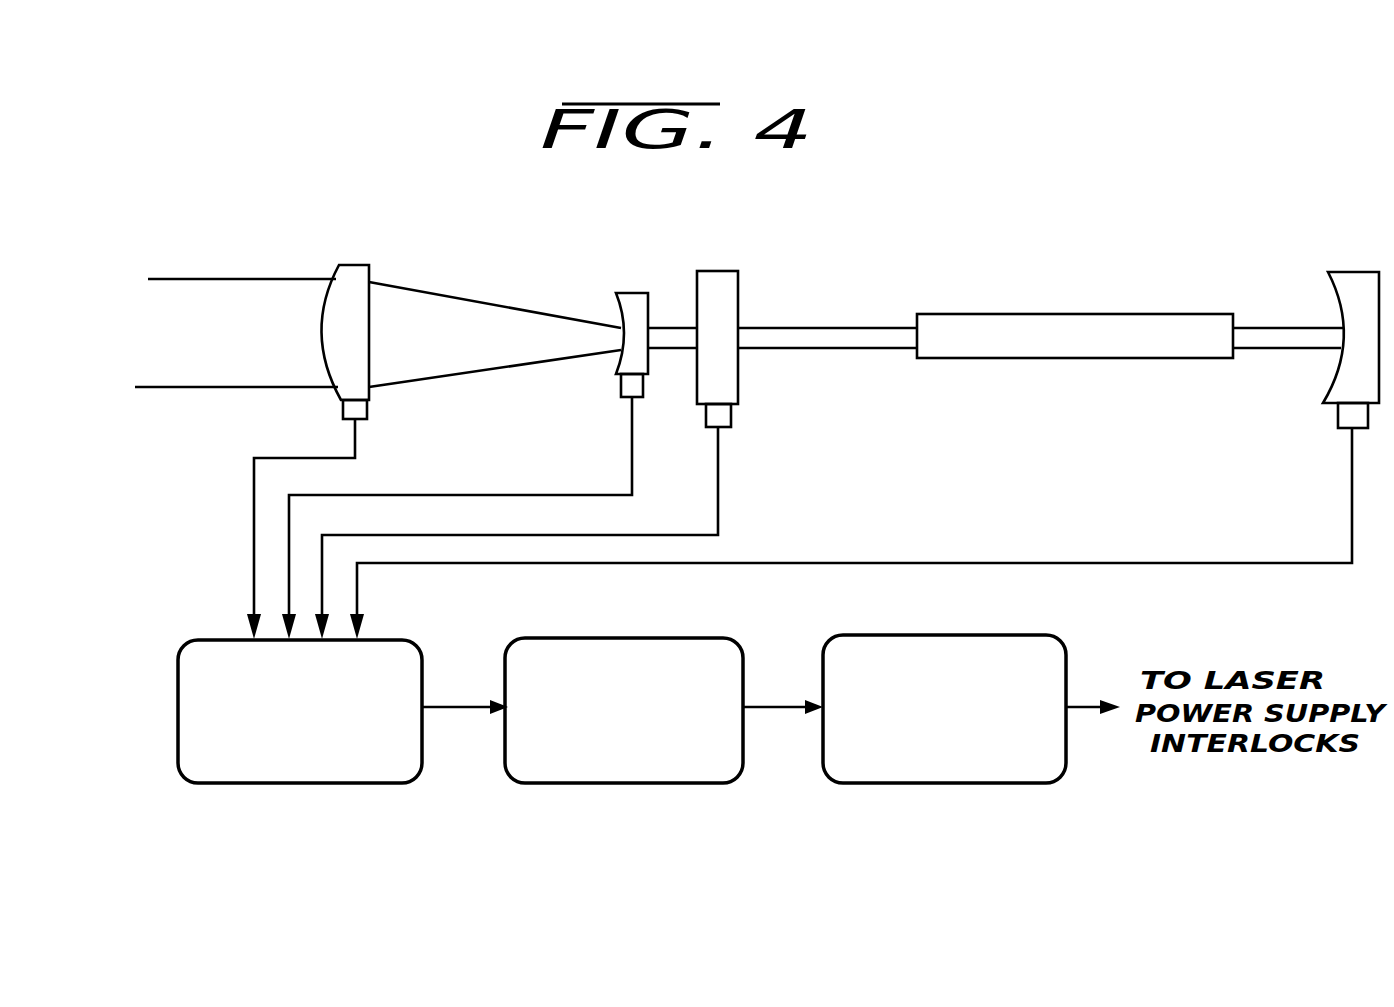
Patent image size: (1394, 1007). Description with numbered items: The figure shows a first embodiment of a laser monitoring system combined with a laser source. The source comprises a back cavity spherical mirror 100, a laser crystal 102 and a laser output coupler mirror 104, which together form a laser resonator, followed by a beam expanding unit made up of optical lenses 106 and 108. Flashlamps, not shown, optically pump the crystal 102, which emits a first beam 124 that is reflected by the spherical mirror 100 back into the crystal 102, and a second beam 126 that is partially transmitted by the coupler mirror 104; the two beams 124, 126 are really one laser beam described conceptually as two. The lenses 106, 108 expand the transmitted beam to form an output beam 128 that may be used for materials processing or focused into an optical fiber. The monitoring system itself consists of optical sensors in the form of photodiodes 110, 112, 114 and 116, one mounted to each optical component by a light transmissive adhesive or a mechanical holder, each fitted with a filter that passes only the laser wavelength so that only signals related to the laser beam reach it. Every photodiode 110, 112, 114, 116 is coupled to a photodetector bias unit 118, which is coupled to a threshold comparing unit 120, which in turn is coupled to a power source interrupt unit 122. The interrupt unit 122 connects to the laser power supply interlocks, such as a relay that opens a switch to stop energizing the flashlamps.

The back cavity spherical mirror 100 is at (1347, 272).
The laser crystal 102 is at (1075, 314).
The laser output coupler mirror 104 is at (722, 271).
The optical lens 106 is at (632, 293).
The optical lens 108 is at (354, 264).
The photodiode 110 is at (1323, 408).
The photodiode 112 is at (731, 415).
The photodiode 114 is at (618, 380).
The photodiode 116 is at (367, 408).
The photodetector bias unit 118 is at (305, 783).
The threshold comparing unit 120 is at (625, 783).
The power source interrupt unit 122 is at (975, 783).
The first beam 124 is at (1277, 350).
The second beam 126 is at (828, 328).
The beam 128 is at (221, 279).